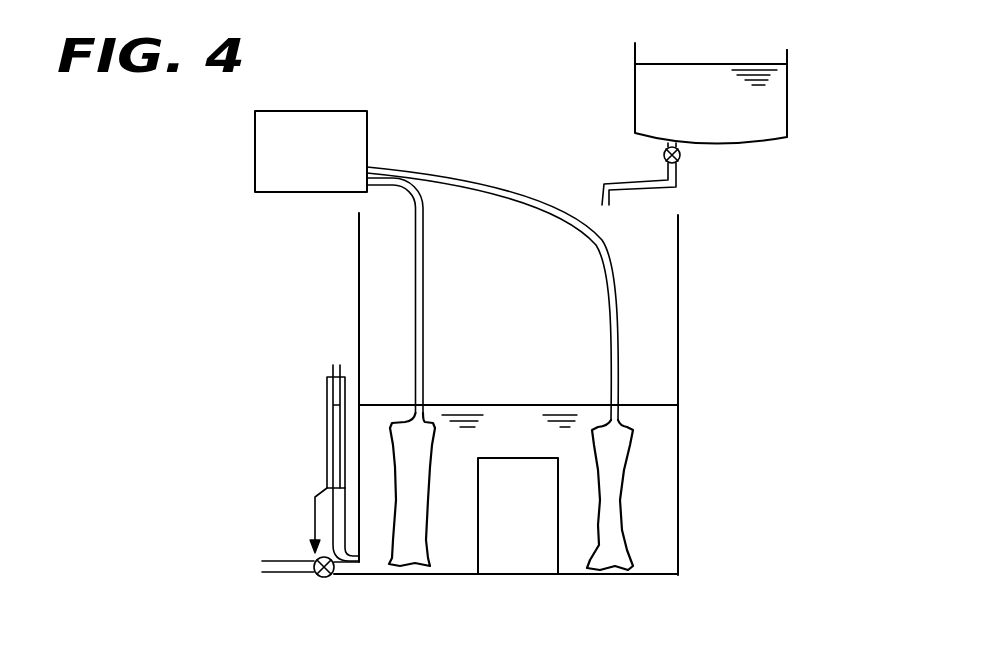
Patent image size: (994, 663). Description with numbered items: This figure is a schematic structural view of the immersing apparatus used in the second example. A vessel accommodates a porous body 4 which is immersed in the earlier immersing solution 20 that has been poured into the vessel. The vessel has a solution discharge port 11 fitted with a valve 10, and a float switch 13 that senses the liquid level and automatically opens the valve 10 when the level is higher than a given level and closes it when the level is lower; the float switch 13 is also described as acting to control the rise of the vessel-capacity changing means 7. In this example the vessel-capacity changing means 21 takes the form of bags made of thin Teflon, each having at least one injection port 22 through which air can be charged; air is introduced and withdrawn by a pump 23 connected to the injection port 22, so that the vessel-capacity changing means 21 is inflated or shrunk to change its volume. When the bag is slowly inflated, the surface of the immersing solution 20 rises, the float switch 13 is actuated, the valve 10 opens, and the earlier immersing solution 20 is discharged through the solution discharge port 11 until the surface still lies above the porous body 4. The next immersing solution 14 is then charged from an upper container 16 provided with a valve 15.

The porous body 4 is at (520, 565).
The vessel-capacity changing means 7 is at (679, 322).
The valve 10 is at (330, 577).
The solution discharge port 11 is at (278, 568).
The float switch 13 is at (328, 457).
The Nth immersing solution 14 is at (658, 98).
The valve 15 is at (683, 156).
The upper container 16 is at (787, 56).
The (N-1)th immersing solution 20 is at (648, 517).
The vessel-capacity changing means 21 is at (633, 448).
The injection port 22 is at (612, 425).
The pump 23 is at (333, 118).